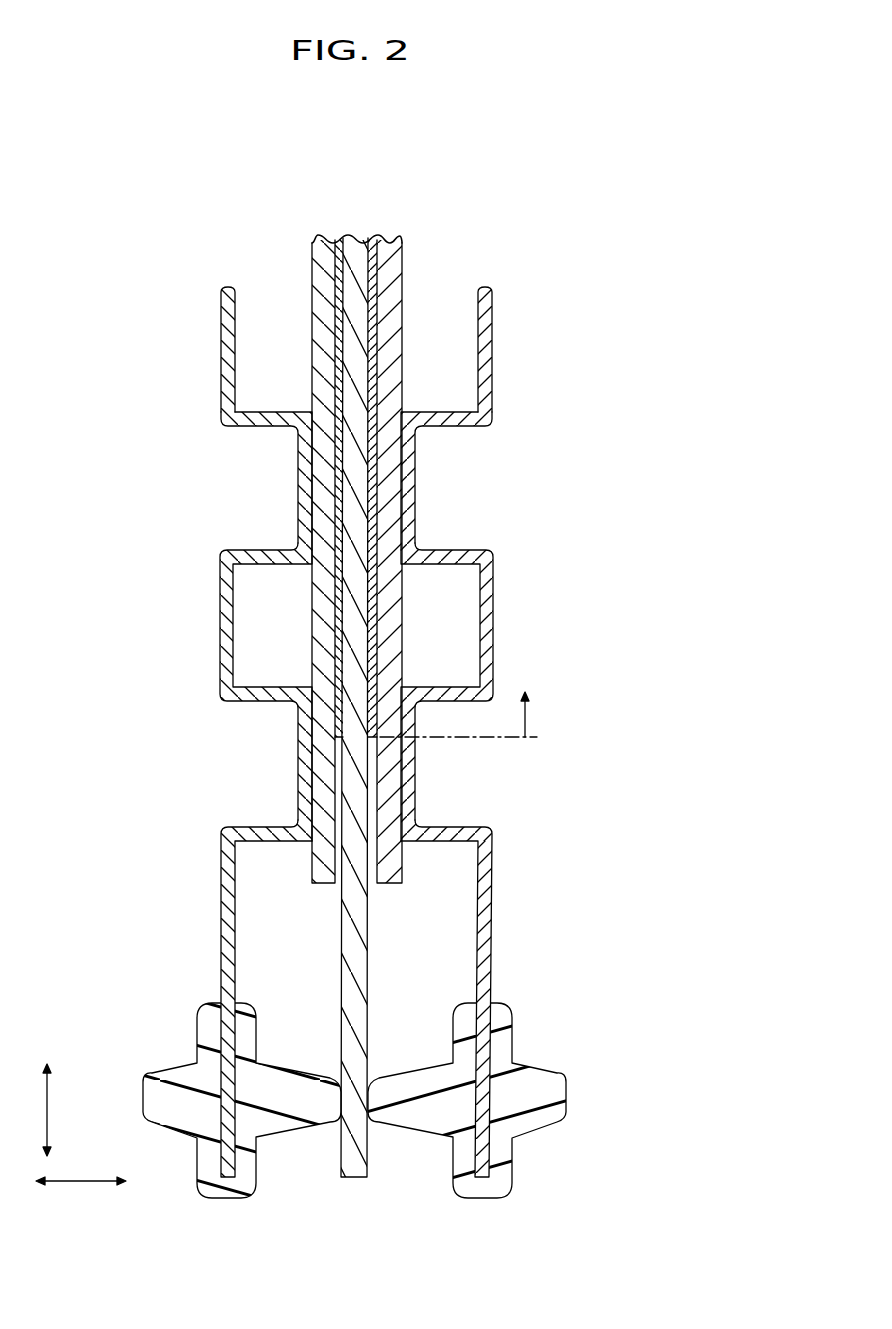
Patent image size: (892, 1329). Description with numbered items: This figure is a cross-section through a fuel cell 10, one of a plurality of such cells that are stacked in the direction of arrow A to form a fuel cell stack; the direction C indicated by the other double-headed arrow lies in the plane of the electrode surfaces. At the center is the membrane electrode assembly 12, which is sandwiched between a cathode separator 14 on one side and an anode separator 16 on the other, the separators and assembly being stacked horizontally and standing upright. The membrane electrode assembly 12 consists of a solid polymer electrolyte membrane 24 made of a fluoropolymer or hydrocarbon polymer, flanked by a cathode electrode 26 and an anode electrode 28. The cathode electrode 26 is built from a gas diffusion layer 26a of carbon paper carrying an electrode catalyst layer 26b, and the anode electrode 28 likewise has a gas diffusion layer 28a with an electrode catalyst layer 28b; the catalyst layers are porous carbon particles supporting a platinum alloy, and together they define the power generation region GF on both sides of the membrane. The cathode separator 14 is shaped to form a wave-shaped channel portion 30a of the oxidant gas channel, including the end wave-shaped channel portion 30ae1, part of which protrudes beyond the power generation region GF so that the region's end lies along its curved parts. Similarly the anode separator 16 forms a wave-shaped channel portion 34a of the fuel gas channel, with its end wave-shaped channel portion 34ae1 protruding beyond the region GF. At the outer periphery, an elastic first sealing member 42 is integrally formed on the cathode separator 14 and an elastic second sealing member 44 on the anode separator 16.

The fuel cell 10 is at (425, 114).
The membrane electrode assembly 12 is at (442, 181).
The cathode separator 14 is at (495, 300).
The anode separator 16 is at (218, 300).
The solid polymer electrolyte membrane 24 is at (357, 233).
The cathode electrode 26 is at (387, 228).
The gas diffusion layer 26a is at (392, 379).
The electrode catalyst layer 26b is at (373, 343).
The anode electrode 28 is at (327, 228).
The gas diffusion layer 28a is at (320, 379).
The electrode catalyst layer 28b is at (337, 343).
The wave-shaped channel portion 30a is at (436, 402).
The wave-shaped channel portion 30ae1 is at (461, 598).
The wave-shaped channel portion 34a is at (277, 402).
The wave-shaped channel portion 34ae1 is at (252, 598).
The first sealing member 42 is at (509, 1165).
The second sealing member 44 is at (200, 1165).
The power generation region GF is at (473, 714).
The stacking direction C is at (38, 1110).
The direction of arrow A is at (81, 1167).